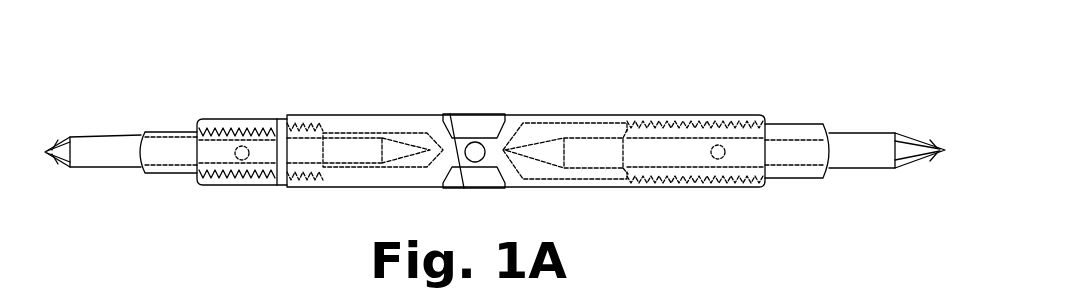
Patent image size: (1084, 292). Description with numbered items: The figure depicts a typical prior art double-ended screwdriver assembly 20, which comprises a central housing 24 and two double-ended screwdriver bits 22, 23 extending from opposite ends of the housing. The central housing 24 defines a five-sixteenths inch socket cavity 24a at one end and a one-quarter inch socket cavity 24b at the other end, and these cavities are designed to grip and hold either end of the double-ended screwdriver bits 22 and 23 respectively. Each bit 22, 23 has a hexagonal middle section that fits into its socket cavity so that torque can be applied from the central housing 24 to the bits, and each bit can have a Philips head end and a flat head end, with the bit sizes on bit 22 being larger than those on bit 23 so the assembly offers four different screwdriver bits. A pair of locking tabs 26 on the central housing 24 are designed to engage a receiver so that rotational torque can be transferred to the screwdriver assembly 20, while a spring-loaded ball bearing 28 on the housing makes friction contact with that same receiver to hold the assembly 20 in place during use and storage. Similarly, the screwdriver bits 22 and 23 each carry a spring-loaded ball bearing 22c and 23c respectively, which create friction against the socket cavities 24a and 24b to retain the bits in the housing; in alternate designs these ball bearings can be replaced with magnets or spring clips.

The double-ended screwdriver assembly 20 is at (283, 90).
The double-ended screwdriver bit 22 is at (795, 178).
The spring-loaded ball bearing 22c is at (724, 146).
The double-ended screwdriver bit 23 is at (168, 177).
The spring-loaded ball bearing 23c is at (238, 148).
The central housing 24 is at (388, 114).
The 5/16 inch socket cavity 24a is at (597, 180).
The 1/4 inch socket cavity 24b is at (334, 176).
The locking tabs 26 is at (476, 113).
The spring-loaded ball bearing 28 is at (479, 143).